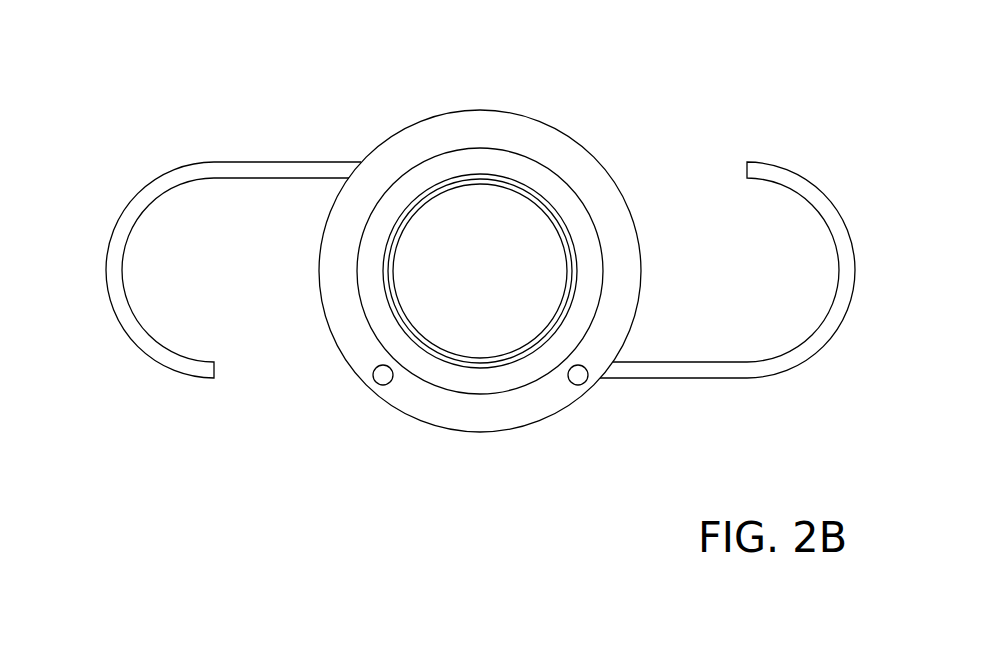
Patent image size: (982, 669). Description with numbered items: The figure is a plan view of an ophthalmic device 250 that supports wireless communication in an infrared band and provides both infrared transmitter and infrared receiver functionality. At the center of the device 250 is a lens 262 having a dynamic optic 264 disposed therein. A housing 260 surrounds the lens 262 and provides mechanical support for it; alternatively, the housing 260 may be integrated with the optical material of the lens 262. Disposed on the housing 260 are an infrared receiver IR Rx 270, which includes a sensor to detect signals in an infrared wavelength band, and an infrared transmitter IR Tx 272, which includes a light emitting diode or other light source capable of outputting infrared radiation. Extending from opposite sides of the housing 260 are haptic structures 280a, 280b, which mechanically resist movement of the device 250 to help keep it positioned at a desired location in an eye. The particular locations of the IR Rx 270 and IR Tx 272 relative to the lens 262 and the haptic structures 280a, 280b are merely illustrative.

The ophthalmic device 250 is at (96, 70).
The housing 260 is at (624, 232).
The lens 262 is at (391, 192).
The dynamic optic 264 is at (483, 205).
The infrared receiver IR Rx 270 is at (364, 393).
The infrared transmitter IR Tx 272 is at (592, 394).
The haptic structure 280a is at (144, 375).
The haptic structure 280b is at (788, 153).